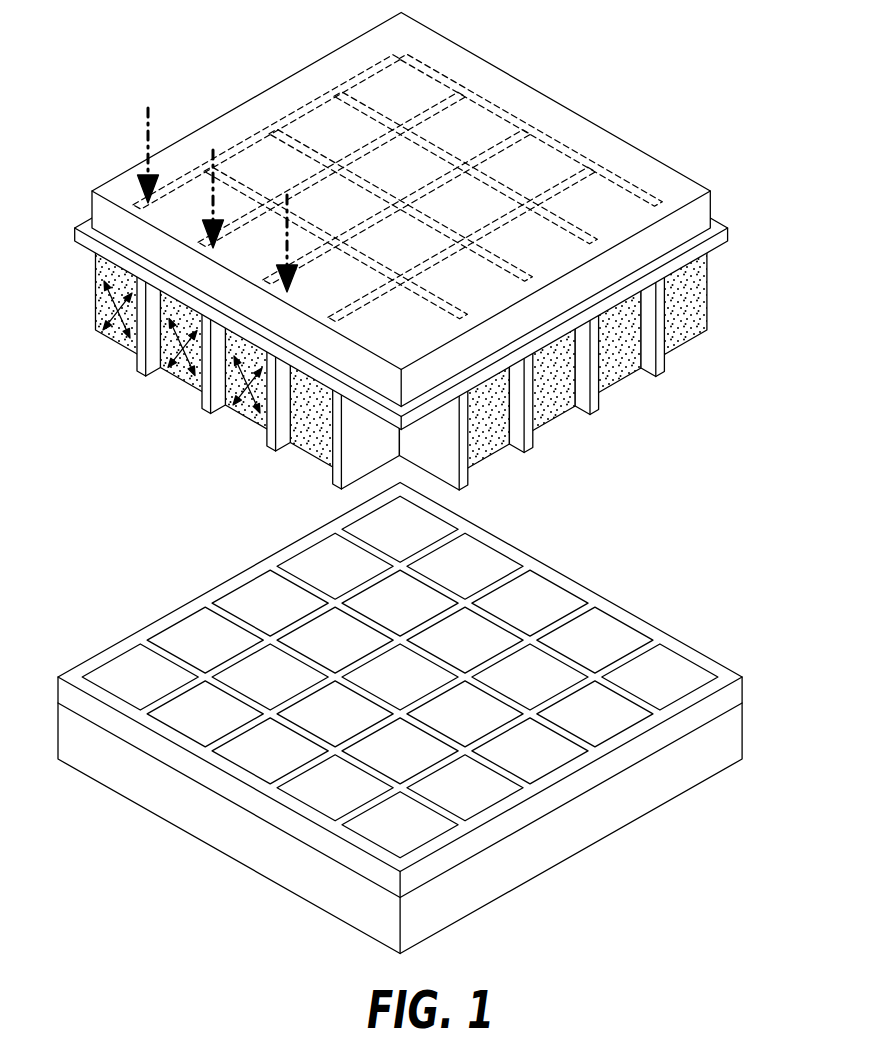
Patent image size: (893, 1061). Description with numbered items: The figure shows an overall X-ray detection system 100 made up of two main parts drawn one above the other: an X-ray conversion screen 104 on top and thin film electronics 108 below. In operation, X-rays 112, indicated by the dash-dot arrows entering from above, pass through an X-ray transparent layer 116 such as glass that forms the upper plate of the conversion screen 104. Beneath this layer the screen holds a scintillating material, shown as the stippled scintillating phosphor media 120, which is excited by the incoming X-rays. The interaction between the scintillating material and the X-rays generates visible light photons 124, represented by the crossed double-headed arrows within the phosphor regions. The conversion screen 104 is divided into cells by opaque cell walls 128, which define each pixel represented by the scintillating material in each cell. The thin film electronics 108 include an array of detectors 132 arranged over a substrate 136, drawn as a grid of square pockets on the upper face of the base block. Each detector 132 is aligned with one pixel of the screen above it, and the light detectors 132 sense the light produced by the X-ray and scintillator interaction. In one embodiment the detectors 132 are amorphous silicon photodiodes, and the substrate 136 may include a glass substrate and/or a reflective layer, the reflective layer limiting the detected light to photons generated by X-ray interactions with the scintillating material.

The X-ray detection system 100 is at (566, 42).
The X-ray conversion screen 104 is at (722, 5).
The thin film electronics 108 is at (748, 483).
The X-rays 112 is at (150, 137).
The X-ray transparent layer 116 is at (273, 87).
The scintillating phosphor media 120 is at (113, 268).
The visible light photons 124 is at (113, 330).
The opaque cell walls 128 is at (432, 470).
The detectors 132 is at (547, 760).
The substrate 136 is at (480, 892).